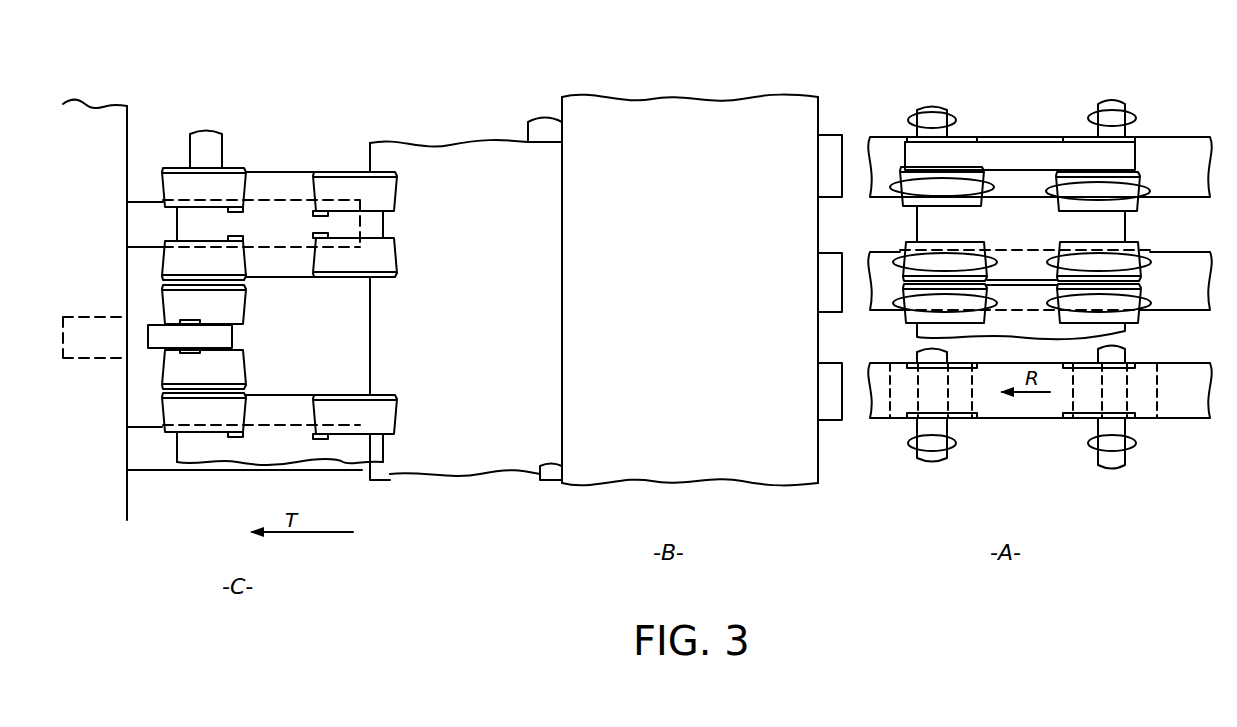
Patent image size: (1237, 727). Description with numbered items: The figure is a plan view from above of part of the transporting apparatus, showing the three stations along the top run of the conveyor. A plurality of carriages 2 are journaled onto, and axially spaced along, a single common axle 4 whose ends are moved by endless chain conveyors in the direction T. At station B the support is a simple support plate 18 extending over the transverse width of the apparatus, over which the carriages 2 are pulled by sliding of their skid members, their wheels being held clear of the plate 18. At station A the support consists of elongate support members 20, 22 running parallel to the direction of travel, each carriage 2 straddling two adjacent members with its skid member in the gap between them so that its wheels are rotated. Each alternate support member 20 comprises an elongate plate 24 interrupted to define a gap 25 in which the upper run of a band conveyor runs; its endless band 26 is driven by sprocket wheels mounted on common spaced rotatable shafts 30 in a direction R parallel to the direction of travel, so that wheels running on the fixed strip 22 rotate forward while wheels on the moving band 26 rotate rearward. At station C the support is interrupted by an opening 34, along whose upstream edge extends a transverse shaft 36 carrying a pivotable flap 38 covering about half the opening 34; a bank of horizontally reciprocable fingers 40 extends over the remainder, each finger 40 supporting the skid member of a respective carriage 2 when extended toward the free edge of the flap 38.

The carriage 2 is at (276, 166).
The axle 4 is at (205, 140).
The support plate 18 is at (716, 303).
The support member 20 is at (1176, 143).
The support member 22 is at (1180, 256).
The elongate plate 24 is at (1175, 410).
The gap 25 is at (905, 405).
The endless band 26 is at (1010, 408).
The rotatable shaft 30 is at (1110, 103).
The opening 34 is at (562, 100).
The transverse shaft 36 is at (535, 130).
The flap 38 is at (490, 305).
The finger 40 is at (138, 210).